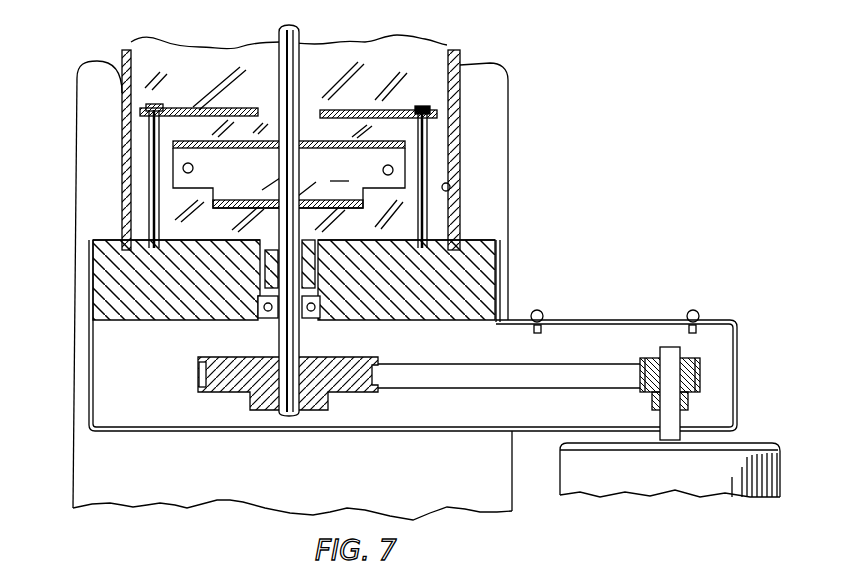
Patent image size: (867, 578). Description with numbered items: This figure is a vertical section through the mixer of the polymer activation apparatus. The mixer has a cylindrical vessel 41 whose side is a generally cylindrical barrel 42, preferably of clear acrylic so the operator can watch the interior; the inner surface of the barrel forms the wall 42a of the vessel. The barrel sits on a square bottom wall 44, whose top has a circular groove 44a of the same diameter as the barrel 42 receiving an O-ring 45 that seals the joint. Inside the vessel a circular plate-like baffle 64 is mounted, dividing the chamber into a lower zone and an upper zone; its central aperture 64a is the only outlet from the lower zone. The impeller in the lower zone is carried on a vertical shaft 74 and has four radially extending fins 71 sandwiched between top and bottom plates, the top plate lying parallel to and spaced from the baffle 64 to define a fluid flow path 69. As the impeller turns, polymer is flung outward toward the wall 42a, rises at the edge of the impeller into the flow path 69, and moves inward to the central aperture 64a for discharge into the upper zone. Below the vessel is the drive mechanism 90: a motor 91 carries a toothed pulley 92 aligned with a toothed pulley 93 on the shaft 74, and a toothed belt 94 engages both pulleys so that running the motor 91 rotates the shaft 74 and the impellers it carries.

The cylindrical vessel 41 is at (460, 52).
The barrel 42 is at (121, 94).
The wall of the vessel 42a is at (450, 187).
The bottom wall 44 is at (150, 292).
The circular groove 44a is at (95, 237).
The O-ring 45 is at (460, 248).
The baffle 64 is at (352, 110).
The central aperture 64a is at (270, 110).
The fluid flow path 69 is at (428, 114).
The fins 71 is at (187, 157).
The shaft 74 is at (297, 50).
The drive mechanism 90 is at (757, 387).
The motor 91 is at (780, 447).
The toothed pulley 92 is at (687, 356).
The toothed pulley 93 is at (358, 356).
The toothed belt 94 is at (527, 370).